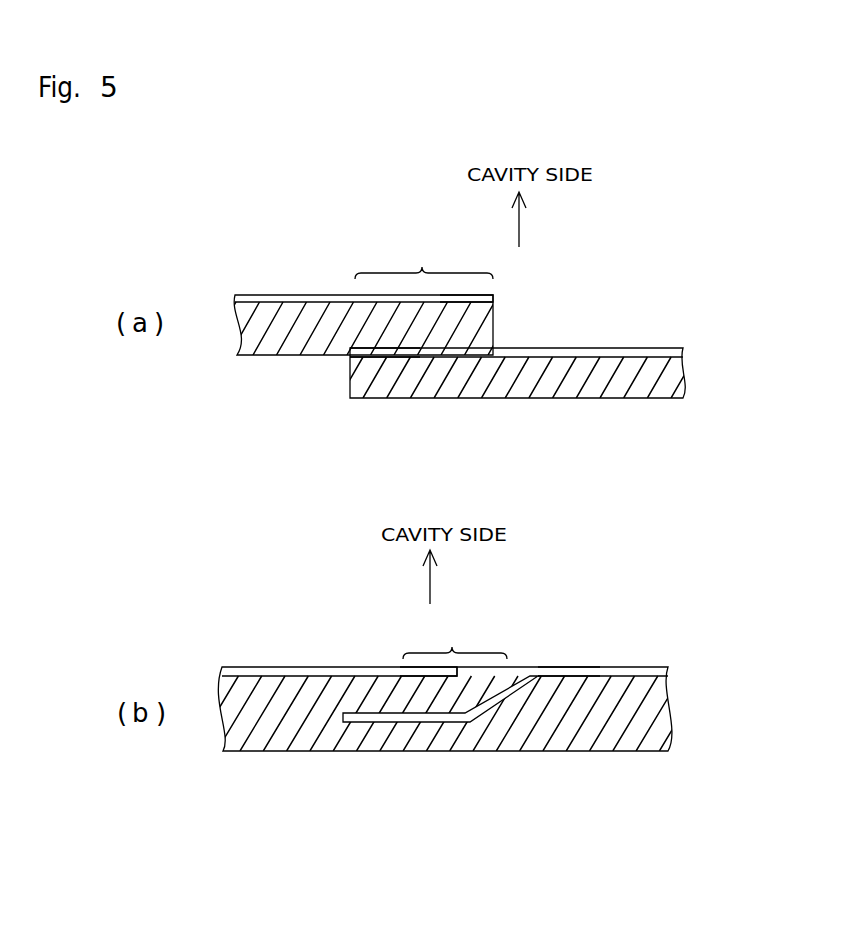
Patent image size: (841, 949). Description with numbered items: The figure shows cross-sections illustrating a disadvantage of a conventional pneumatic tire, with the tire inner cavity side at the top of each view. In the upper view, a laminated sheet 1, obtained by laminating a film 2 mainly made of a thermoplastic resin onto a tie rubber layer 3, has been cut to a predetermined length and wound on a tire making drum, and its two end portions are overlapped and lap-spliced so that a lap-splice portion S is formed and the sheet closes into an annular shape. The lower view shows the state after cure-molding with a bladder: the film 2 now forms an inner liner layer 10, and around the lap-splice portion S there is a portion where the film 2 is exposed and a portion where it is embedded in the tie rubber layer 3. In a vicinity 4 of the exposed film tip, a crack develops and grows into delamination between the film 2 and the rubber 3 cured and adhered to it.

The laminated sheet 1 is at (325, 293).
The film 2 is at (260, 293).
The tie rubber layer 3 is at (275, 350).
The vicinity of the tip of the film 4 is at (455, 638).
The inner liner layer 10 is at (358, 668).
The lap-splice portion S is at (424, 257).